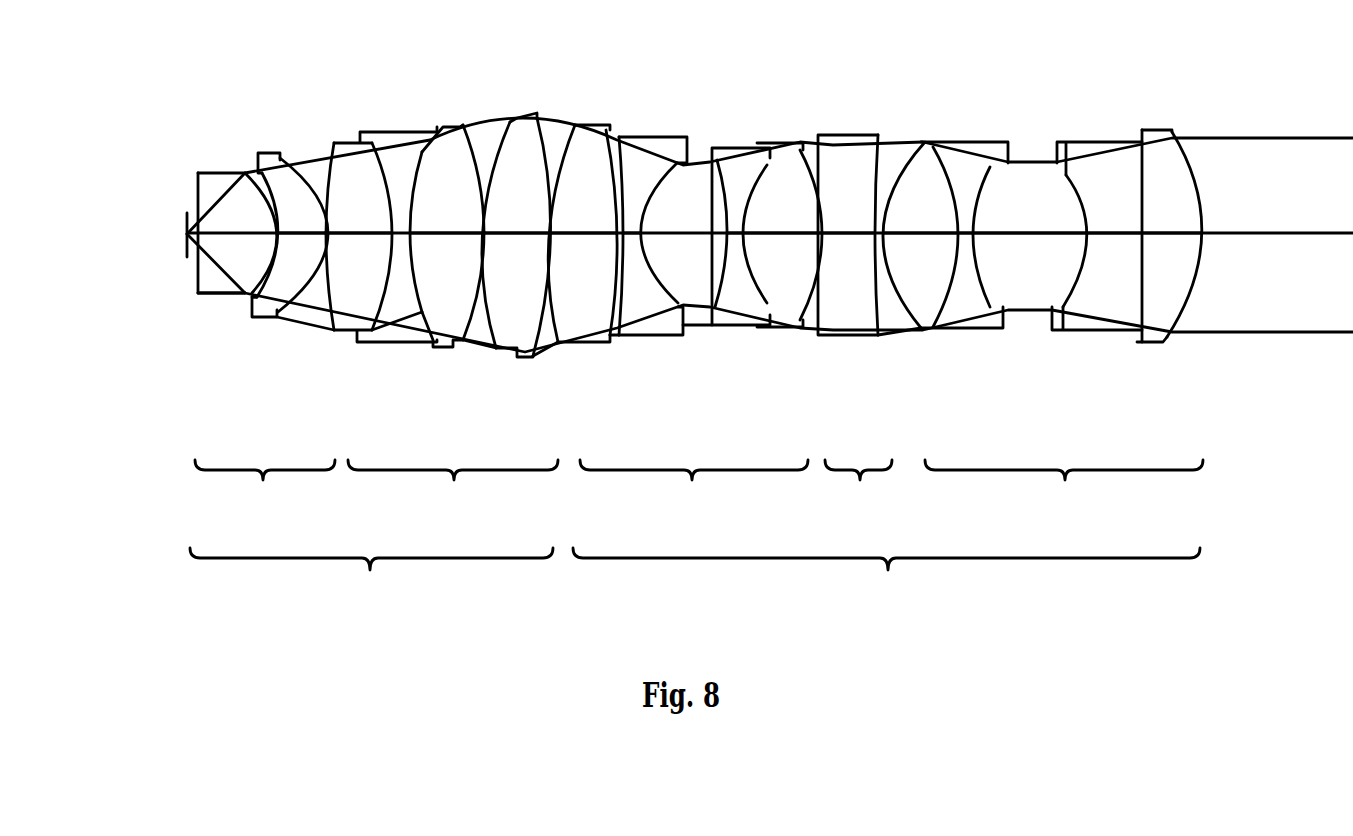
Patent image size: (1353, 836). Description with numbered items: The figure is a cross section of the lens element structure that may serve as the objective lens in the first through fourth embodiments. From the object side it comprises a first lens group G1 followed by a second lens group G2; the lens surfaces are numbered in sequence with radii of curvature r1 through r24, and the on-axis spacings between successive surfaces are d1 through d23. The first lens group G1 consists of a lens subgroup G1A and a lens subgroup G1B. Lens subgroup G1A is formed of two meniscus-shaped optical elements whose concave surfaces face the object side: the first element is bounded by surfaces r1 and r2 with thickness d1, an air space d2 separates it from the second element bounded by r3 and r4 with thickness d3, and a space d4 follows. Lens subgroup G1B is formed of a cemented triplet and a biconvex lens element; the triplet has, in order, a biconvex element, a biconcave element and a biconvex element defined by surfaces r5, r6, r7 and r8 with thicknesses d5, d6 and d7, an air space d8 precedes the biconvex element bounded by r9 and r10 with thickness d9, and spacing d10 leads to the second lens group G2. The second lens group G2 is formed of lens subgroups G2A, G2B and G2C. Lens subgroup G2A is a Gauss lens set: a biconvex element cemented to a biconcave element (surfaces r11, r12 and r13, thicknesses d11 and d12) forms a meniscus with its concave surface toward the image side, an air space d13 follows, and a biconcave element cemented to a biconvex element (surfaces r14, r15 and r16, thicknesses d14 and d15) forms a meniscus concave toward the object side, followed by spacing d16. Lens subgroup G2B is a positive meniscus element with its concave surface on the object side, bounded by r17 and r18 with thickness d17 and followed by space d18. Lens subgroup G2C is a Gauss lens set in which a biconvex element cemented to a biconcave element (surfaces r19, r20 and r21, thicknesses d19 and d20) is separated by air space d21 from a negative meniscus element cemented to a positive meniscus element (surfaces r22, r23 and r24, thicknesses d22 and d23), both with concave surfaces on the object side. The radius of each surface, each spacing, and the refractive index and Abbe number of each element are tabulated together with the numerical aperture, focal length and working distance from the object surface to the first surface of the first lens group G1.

The radius of curvature of first lens surface r1 is at (186, 215).
The radius of curvature of second lens surface r2 is at (248, 197).
The radius of curvature of third lens surface r3 is at (262, 153).
The radius of curvature of fourth lens surface r4 is at (293, 153).
The radius of curvature of fifth lens surface r5 is at (337, 143).
The radius of curvature of sixth lens surface r6 is at (374, 143).
The radius of curvature of seventh lens surface r7 is at (418, 127).
The radius of curvature of eighth lens surface r8 is at (466, 125).
The radius of curvature of ninth lens surface r9 is at (510, 118).
The radius of curvature of tenth lens surface r10 is at (540, 113).
The radius of curvature of eleventh lens surface r11 is at (578, 125).
The radius of curvature of twelfth lens surface r12 is at (630, 137).
The radius of curvature of thirteenth lens surface r13 is at (676, 137).
The radius of curvature of fourteenth lens surface r14 is at (716, 148).
The radius of curvature of fifteenth lens surface r15 is at (762, 167).
The radius of curvature of sixteenth lens surface r16 is at (798, 150).
The radius of curvature of seventeenth lens surface r17 is at (838, 137).
The radius of curvature of eighteenth lens surface r18 is at (887, 160).
The radius of curvature of nineteenth lens surface r19 is at (903, 150).
The radius of curvature of twentieth lens surface r20 is at (958, 142).
The radius of curvature of twenty-first lens surface r21 is at (1000, 142).
The radius of curvature of twenty-second lens surface r22 is at (1058, 162).
The radius of curvature of twenty-third lens surface r23 is at (1142, 168).
The radius of curvature of twenty-fourth lens surface r24 is at (1190, 168).
The on-axis thickness of first lens element d1 is at (205, 297).
The on-axis air space after first lens element d2 is at (247, 297).
The on-axis thickness of second lens element d3 is at (302, 261).
The on-axis air space between G1A and G1B d4 is at (321, 300).
The on-axis thickness of first triplet element d5 is at (358, 259).
The on-axis thickness of second triplet element d6 is at (397, 343).
The on-axis thickness of third triplet element d7 is at (447, 259).
The on-axis air space after cemented triplet d8 is at (485, 350).
The on-axis thickness of biconvex element of G1B d9 is at (517, 259).
The on-axis air space between G1 and G2 d10 is at (552, 350).
The on-axis thickness of biconvex element of first G2A doublet d11 is at (583, 259).
The on-axis thickness of biconcave element of first G2A doublet d12 is at (637, 335).
The on-axis air space within G2A d13 is at (667, 259).
The on-axis thickness of biconcave element of second G2A doublet d14 is at (737, 327).
The on-axis thickness of biconvex element of second G2A doublet d15 is at (768, 259).
The on-axis air space between G2A and G2B d16 is at (815, 327).
The on-axis thickness of G2B meniscus element d17 is at (849, 259).
The on-axis air space between G2B and G2C d18 is at (886, 335).
The on-axis thickness of biconvex element of first G2C doublet d19 is at (920, 259).
The on-axis thickness of biconcave element of first G2C doublet d20 is at (966, 332).
The on-axis air space within G2C d21 is at (1030, 259).
The on-axis thickness of negative meniscus element of G2C d22 is at (1114, 259).
The on-axis thickness of positive meniscus element of G2C d23 is at (1163, 233).
The lens subgroup G1A is at (265, 495).
The lens subgroup G1B is at (453, 495).
The Gauss lens set G2A is at (694, 495).
The lens subgroup G2B is at (859, 495).
The Gauss lens set G2C is at (1064, 495).
The first lens group G1 is at (371, 583).
The second lens group G2 is at (886, 583).